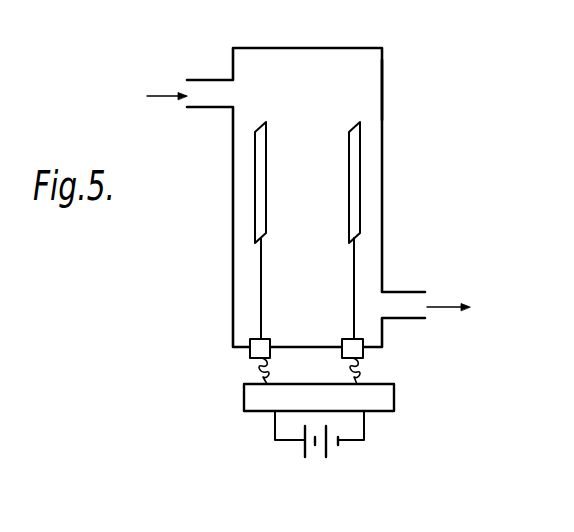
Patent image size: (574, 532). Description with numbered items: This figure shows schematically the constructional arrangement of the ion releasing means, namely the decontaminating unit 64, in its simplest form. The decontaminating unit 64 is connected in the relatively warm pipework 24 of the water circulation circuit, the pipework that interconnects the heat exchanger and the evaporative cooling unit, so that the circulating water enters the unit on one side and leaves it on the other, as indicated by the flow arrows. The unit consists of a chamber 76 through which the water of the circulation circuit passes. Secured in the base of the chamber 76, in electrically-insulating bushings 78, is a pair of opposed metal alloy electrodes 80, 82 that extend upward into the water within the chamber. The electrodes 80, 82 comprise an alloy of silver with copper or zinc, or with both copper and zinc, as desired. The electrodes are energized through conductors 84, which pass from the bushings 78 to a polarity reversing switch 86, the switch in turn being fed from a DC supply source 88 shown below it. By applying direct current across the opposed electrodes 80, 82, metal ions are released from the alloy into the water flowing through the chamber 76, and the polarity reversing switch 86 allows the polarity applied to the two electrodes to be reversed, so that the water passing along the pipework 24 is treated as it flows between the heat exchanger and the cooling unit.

The warm pipework 24 is at (205, 80).
The decontaminating unit 64 is at (361, 48).
The chamber 76 is at (383, 72).
The electrically-insulating bushings 78 is at (348, 339).
The metal alloy electrode 80 is at (268, 143).
The metal alloy electrode 82 is at (348, 140).
The conductors 84 is at (359, 381).
The polarity reversing switch 86 is at (252, 412).
The DC supply source 88 is at (305, 452).